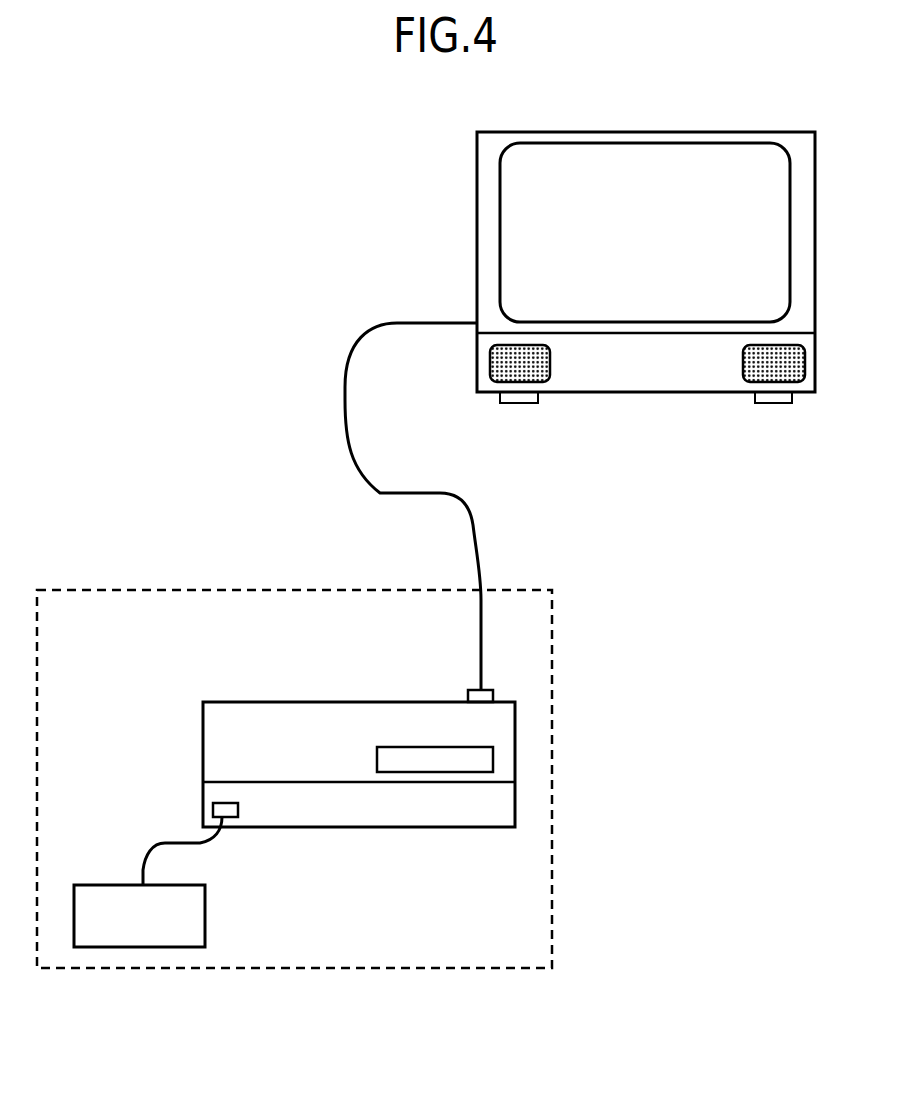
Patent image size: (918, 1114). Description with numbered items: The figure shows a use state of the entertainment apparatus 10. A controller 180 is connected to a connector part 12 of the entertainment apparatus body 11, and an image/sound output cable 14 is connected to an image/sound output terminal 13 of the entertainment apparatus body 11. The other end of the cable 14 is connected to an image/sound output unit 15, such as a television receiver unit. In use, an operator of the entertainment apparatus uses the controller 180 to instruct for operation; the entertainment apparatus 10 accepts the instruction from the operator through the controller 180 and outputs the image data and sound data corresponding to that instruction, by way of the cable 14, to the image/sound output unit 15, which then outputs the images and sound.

The entertainment apparatus 10 is at (88, 572).
The entertainment apparatus body 11 is at (310, 702).
The connector part 12 is at (224, 803).
The image/sound output terminal 13 is at (468, 690).
The image/sound output cable 14 is at (442, 320).
The image/sound output unit 15 is at (477, 213).
The controller 180 is at (205, 921).